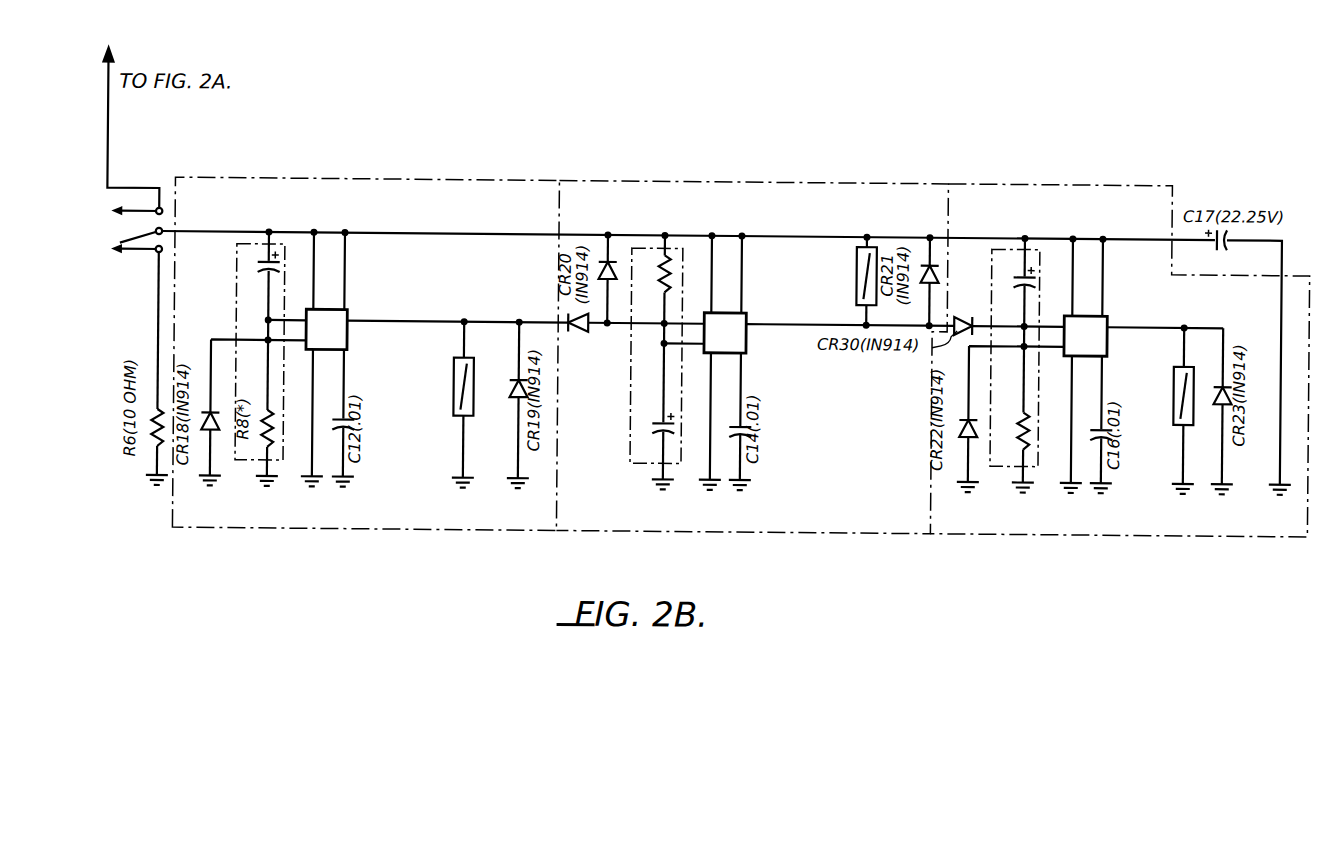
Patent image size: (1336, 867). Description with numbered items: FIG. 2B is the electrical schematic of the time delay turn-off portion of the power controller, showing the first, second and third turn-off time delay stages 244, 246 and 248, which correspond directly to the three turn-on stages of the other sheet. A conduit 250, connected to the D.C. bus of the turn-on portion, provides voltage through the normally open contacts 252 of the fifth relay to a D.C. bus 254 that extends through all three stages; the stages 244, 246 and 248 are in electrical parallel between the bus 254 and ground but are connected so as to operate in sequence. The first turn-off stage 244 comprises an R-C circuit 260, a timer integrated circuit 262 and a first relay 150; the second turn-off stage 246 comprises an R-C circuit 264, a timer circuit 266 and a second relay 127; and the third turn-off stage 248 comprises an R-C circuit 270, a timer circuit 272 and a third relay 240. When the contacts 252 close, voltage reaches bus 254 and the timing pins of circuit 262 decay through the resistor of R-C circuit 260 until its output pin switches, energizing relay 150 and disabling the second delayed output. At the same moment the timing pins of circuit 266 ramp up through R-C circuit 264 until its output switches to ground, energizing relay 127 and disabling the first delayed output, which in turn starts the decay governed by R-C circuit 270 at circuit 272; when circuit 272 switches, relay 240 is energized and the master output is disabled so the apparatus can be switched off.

The conduit 250 is at (107, 120).
The normally open contacts 252 is at (118, 238).
The first turn-off time delay stage 244 is at (374, 177).
The second turn-off time delay stage 246 is at (738, 177).
The third turn-off time delay stage 248 is at (1055, 177).
The D.C. bus 254 is at (432, 231).
The R-C circuit 260 is at (237, 305).
The type 555 integrated circuit 262 is at (348, 339).
The R-C circuit 264 is at (632, 459).
The type 555 circuit 266 is at (747, 343).
The R-C circuit 270 is at (1040, 459).
The type 555 circuit 272 is at (1108, 339).
The K6 relay 150 is at (453, 370).
The K7 relay 127 is at (857, 292).
The K8 relay 240 is at (1177, 365).